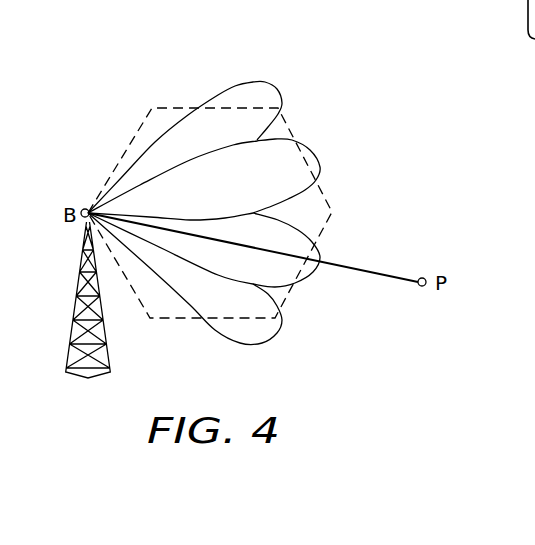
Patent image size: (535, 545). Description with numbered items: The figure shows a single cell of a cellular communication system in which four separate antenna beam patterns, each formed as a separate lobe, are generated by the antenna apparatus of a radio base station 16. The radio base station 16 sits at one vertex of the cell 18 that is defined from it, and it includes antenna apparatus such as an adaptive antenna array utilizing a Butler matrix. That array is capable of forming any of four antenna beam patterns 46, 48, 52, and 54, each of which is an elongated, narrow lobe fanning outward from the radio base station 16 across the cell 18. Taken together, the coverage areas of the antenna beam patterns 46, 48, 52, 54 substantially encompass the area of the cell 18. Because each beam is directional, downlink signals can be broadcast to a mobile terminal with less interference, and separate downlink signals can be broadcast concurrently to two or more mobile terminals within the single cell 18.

The radio base station 16 is at (84, 208).
The cell 18 is at (168, 107).
The antenna beam pattern 46 is at (258, 80).
The antenna beam pattern 48 is at (323, 158).
The antenna beam pattern 52 is at (322, 263).
The antenna beam pattern 54 is at (258, 345).